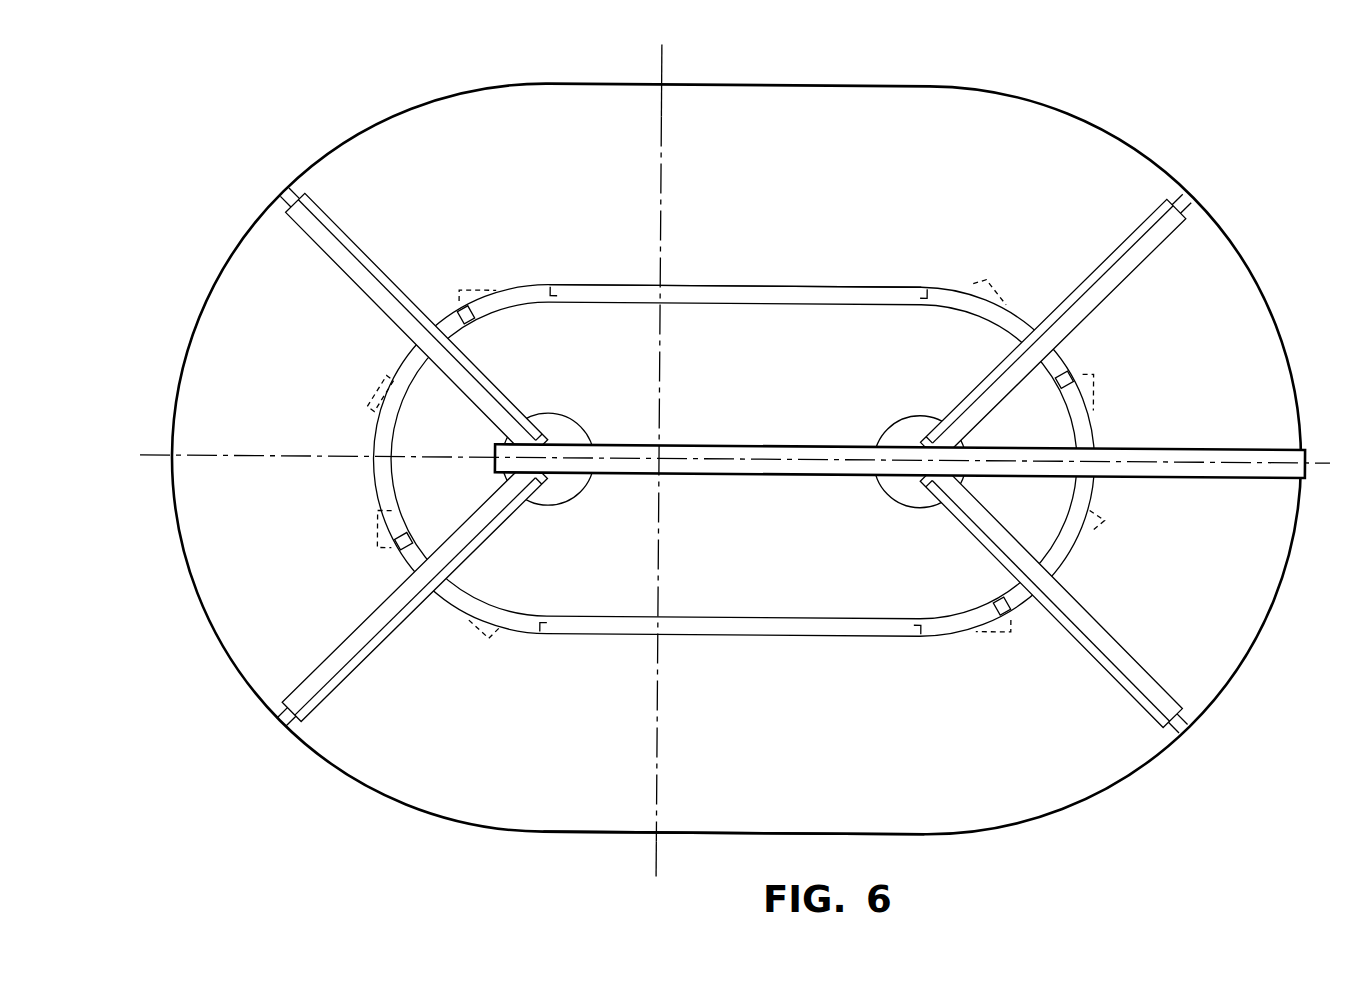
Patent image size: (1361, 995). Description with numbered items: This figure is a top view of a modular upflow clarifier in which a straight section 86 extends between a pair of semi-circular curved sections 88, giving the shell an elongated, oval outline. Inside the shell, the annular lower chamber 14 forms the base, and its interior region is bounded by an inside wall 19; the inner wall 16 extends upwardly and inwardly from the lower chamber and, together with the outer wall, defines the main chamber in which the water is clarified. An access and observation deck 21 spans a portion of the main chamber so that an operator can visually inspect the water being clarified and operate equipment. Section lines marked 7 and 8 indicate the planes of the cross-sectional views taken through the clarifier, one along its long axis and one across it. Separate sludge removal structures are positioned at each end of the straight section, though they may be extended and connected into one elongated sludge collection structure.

The section line 7- 7 is at (139, 488).
The section line 8- 8 is at (664, 52).
The lower chamber 14 is at (466, 608).
The inner wall 16 is at (853, 318).
The inside wall 19 is at (775, 305).
The access and observation deck 21 is at (1205, 450).
The straight section 86 is at (640, 803).
The semi-circular curved sections 88 is at (235, 652).